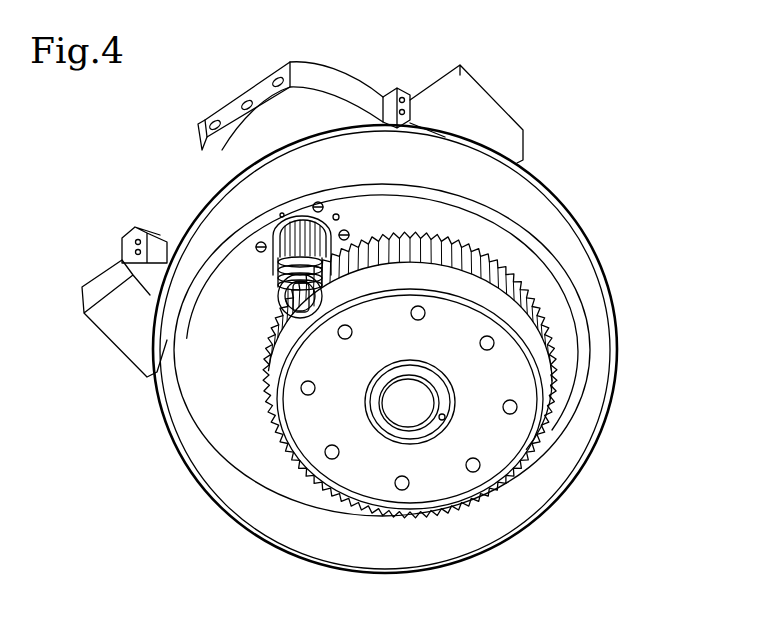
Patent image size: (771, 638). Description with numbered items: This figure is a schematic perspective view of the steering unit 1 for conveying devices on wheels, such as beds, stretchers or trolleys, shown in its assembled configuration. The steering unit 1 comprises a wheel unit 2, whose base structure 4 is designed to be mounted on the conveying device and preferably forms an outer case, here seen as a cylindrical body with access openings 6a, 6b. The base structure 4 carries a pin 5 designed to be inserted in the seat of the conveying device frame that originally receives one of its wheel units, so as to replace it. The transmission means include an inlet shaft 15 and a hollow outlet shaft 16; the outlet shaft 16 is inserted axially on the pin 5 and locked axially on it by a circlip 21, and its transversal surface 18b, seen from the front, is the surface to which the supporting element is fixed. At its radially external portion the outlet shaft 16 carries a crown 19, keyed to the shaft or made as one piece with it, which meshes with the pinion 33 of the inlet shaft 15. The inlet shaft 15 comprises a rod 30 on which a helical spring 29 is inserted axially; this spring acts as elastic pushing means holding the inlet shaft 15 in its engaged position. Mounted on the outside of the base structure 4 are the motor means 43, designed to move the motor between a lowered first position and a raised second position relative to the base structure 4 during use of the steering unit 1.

The steering unit 1 is at (568, 104).
The wheel unit 2 is at (585, 242).
The base structure 4 is at (587, 447).
The pin 5 is at (409, 405).
The access opening 6a is at (597, 290).
The access opening 6b is at (553, 207).
The inlet shaft 15 is at (267, 232).
The outlet shaft 16 is at (363, 472).
The transversal surface 18b is at (500, 373).
The crown 19 is at (545, 312).
The circlip 21 is at (443, 415).
The helical spring 29 is at (285, 280).
The rod 30 is at (300, 305).
The pinion 33 is at (300, 228).
The motor means 43 is at (447, 86).